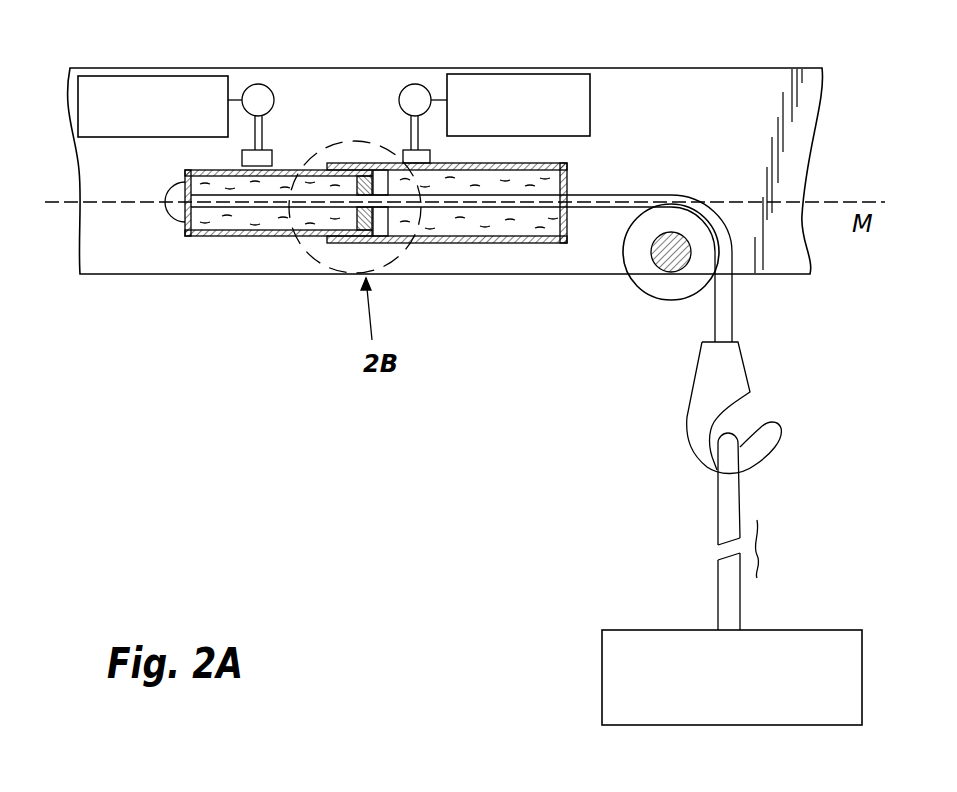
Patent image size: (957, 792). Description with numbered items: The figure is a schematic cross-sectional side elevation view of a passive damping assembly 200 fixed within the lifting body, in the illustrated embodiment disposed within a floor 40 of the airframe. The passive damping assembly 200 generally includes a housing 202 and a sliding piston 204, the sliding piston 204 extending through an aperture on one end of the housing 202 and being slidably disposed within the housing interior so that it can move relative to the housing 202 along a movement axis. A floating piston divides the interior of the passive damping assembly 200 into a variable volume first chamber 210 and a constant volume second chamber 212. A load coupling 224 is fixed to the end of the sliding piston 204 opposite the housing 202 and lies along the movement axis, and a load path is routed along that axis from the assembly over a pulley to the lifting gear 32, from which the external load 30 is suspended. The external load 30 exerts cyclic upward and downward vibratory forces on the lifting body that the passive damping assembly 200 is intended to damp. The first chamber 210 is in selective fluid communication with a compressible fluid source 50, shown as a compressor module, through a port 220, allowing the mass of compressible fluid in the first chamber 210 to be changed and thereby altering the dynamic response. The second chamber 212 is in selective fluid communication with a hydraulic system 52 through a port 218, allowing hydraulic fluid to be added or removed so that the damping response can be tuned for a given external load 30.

The compressible fluid source 50 is at (96, 76).
The hydraulic system 52 is at (576, 74).
The floor 40 is at (714, 132).
The port 220 is at (242, 160).
The port 218 is at (430, 157).
The load coupling 224 is at (170, 212).
The sliding piston 204 is at (195, 236).
The first chamber 210 is at (248, 215).
The second chamber 212 is at (452, 232).
The housing 202 is at (530, 243).
The passive damping assembly 200 is at (383, 294).
The external load 30 is at (628, 630).
The lifting gear 32 is at (765, 548).